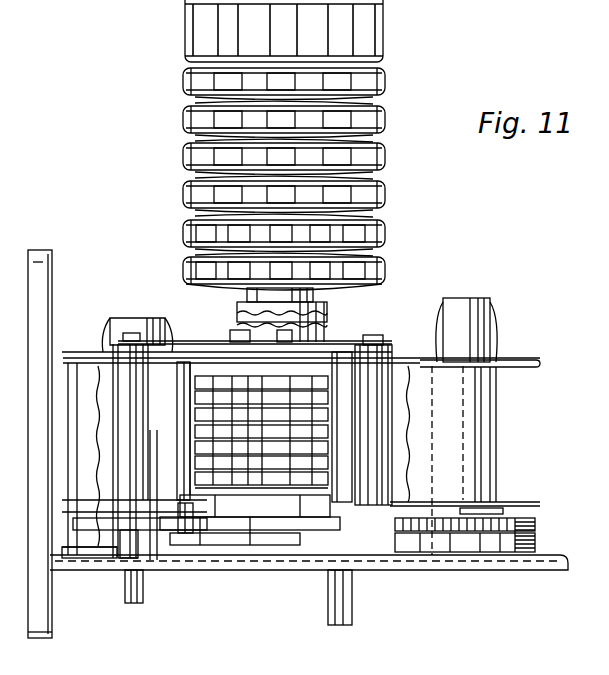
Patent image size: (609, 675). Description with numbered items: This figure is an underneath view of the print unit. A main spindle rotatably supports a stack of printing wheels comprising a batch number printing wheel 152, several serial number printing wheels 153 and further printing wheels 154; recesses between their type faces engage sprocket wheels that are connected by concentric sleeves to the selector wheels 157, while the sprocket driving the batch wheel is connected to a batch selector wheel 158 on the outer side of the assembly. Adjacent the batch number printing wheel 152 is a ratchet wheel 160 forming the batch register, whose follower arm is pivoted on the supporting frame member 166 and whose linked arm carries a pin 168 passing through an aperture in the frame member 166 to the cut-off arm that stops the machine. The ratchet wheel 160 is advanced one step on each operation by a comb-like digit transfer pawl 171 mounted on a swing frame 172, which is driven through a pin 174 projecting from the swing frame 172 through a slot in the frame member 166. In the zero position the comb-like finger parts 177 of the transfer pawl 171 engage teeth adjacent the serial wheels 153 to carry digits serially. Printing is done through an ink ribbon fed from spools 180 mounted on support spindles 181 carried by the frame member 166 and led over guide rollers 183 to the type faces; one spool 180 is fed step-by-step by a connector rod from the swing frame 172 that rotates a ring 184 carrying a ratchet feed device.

The batch number printing wheel 152 is at (328, 482).
The serial number printing wheels 153 is at (327, 456).
The further printing wheels 154 is at (330, 398).
The selector wheels 157 is at (391, 72).
The batch selector wheel 158 is at (386, 62).
The ratchet wheel 160 is at (256, 546).
The frame member 166 is at (531, 573).
The pin 168 is at (127, 593).
The digit transfer pawl 171 is at (160, 568).
The swing frame 172 is at (195, 560).
The pin 174 is at (355, 598).
The comb-like finger parts 177 is at (162, 487).
The spools 180 is at (500, 360).
The support spindles 181 is at (125, 318).
The guide rollers 183 is at (124, 10).
The ring 184 is at (524, 532).